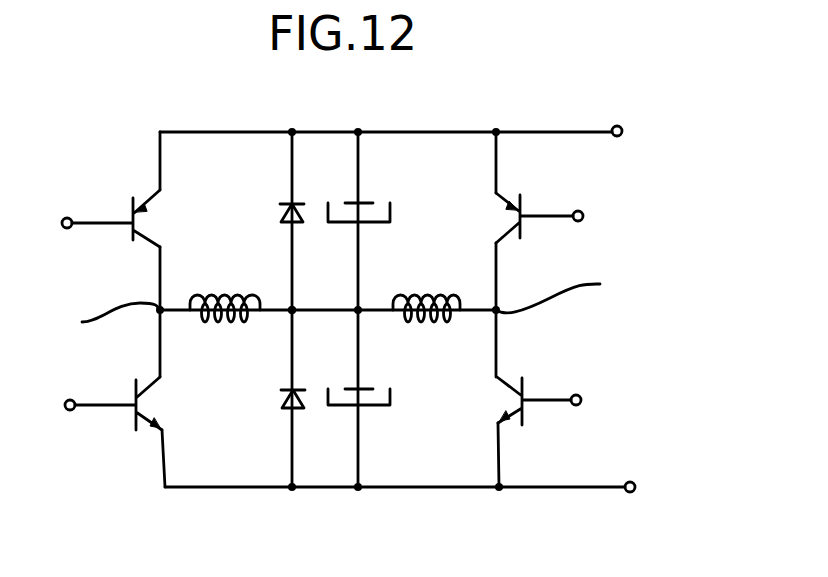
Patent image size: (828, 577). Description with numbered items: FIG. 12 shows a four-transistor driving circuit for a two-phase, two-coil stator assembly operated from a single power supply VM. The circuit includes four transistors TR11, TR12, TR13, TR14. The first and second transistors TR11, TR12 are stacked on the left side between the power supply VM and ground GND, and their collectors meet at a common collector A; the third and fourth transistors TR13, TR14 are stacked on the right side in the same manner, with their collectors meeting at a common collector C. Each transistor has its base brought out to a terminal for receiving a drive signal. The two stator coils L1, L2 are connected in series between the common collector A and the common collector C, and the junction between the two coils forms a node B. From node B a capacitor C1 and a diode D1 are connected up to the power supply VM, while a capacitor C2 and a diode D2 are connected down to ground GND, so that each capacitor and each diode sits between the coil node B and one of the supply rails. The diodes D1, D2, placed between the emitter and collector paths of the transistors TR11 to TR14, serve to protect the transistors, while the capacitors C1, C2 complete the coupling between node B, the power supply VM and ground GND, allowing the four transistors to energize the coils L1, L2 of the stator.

The first transistor TR11 is at (102, 212).
The second transistor TR12 is at (103, 397).
The third transistor TR13 is at (551, 210).
The fourth transistor TR14 is at (552, 391).
The diode D1 is at (269, 201).
The diode D2 is at (273, 419).
The capacitor C1 is at (378, 204).
The capacitor C2 is at (374, 418).
The stator coil L1 is at (225, 289).
The stator coil L2 is at (426, 291).
The common collector A is at (108, 322).
The node B is at (293, 309).
The common collector C is at (561, 289).
The power supply VM is at (642, 126).
The ground GND is at (674, 486).